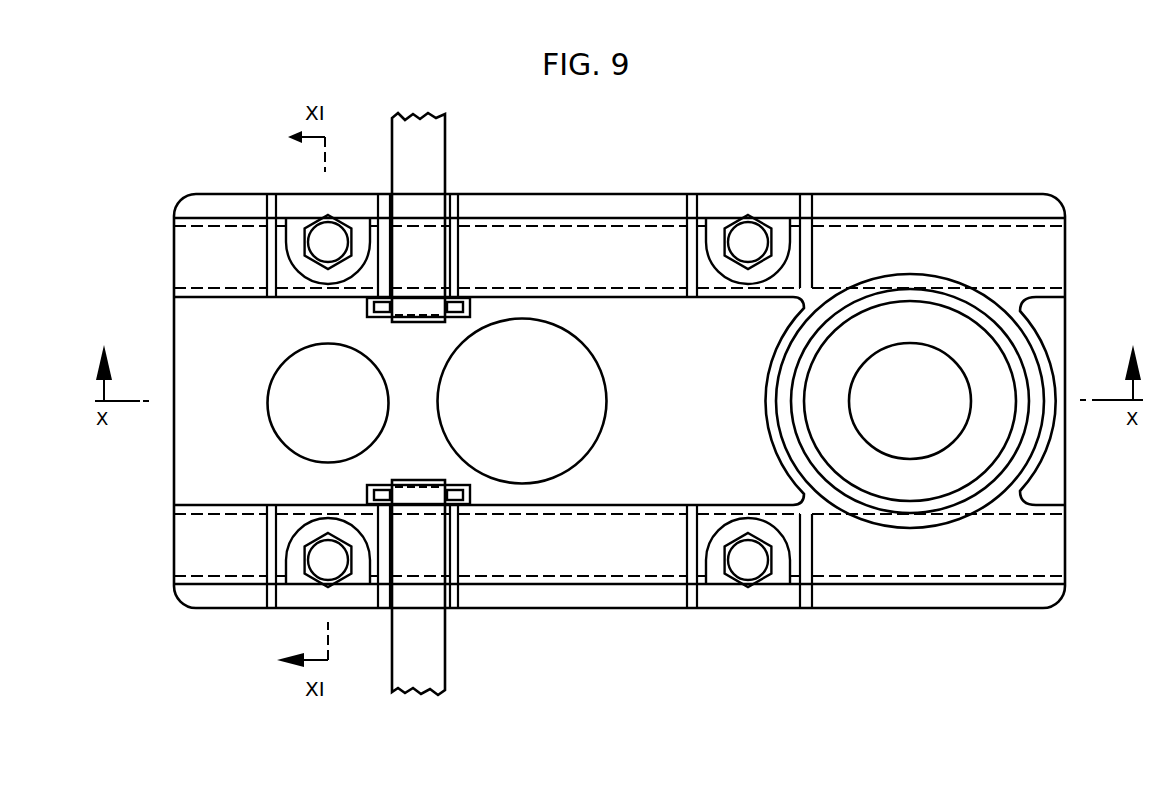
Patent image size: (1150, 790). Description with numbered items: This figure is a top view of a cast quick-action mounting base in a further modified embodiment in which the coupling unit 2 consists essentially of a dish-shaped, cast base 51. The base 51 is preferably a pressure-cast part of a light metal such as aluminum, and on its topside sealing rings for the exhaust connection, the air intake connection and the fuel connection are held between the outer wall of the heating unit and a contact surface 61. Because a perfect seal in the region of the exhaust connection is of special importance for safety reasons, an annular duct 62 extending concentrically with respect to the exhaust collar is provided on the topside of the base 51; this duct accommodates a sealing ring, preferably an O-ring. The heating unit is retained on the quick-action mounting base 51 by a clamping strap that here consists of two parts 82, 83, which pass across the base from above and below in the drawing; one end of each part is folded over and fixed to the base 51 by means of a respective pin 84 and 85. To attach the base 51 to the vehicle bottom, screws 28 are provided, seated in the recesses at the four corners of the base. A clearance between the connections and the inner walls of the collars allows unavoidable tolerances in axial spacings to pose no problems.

The coupling unit 2 is at (947, 147).
The screws 28 is at (336, 236).
The cast base 51 is at (575, 211).
The contact surface 61 is at (978, 452).
The annular duct 62 is at (1023, 350).
The clamping strap part 82 is at (427, 158).
The clamping strap part 83 is at (427, 645).
The pin 84 is at (457, 303).
The pin 85 is at (466, 503).